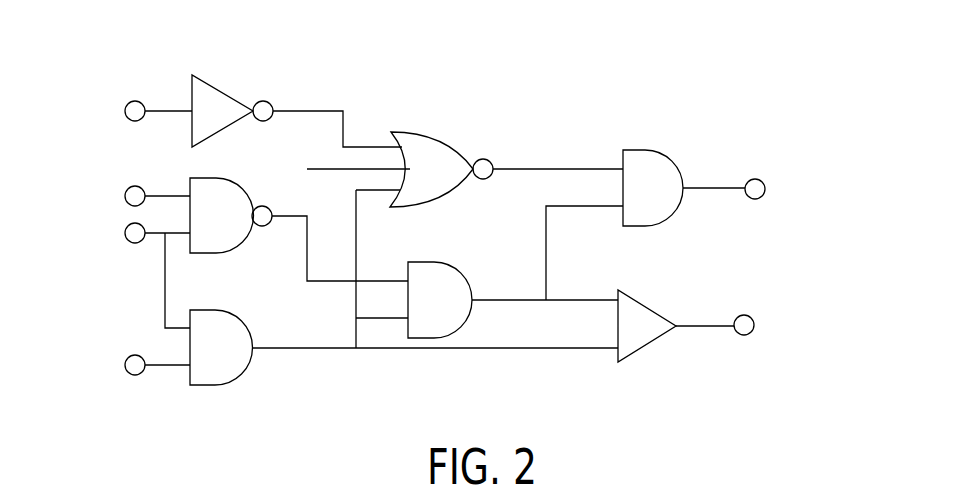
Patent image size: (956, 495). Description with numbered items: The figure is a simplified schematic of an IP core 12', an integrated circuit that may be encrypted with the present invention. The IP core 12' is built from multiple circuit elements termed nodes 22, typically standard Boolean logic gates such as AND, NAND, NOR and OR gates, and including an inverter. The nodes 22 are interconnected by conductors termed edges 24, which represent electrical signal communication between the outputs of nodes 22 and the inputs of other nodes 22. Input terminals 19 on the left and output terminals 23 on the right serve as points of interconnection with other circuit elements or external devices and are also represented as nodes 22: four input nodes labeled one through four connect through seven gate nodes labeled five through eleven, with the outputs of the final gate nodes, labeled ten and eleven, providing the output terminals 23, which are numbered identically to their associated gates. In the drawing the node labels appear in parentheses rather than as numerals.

The IP core 12' is at (451, 196).
The input terminals 19 is at (112, 55).
The nodes 22 is at (227, 90).
The output terminals 23 is at (642, 60).
The edges 24 is at (538, 169).